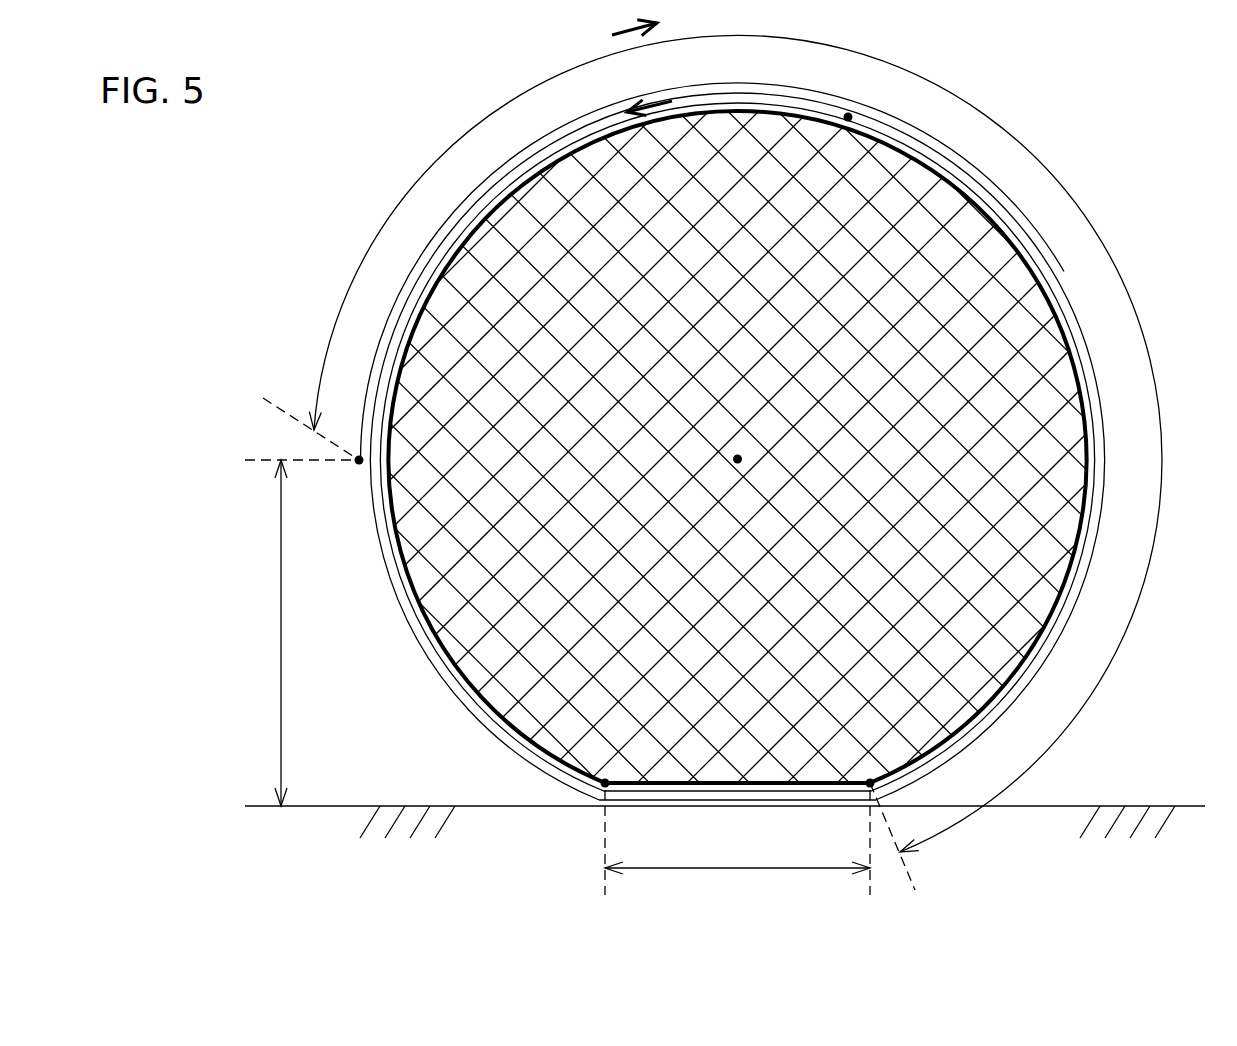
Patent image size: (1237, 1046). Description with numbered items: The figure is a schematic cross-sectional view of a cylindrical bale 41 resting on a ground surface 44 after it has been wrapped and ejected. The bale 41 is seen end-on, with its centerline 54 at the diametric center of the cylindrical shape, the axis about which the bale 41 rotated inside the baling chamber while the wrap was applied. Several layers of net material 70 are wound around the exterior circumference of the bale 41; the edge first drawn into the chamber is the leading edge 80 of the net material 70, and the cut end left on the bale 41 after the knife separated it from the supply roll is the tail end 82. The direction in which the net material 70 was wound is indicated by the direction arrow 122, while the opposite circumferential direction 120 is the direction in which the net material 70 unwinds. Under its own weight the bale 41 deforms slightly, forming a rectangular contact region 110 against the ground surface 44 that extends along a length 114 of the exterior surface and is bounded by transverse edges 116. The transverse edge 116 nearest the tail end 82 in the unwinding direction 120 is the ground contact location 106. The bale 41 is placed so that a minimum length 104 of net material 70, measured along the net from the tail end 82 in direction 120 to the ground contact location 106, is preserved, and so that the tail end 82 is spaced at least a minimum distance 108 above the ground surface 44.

The bale 41 is at (1017, 240).
The ground surface 44 is at (1192, 806).
The centerline 54 is at (737, 459).
The net material 70 is at (955, 150).
The leading edge 80 is at (848, 114).
The tail end 82 is at (359, 462).
The minimum length 104 is at (1140, 322).
The ground contact location 106 is at (870, 782).
The minimum distance 108 is at (281, 632).
The rectangular contact region 110 is at (722, 782).
The length 114 is at (713, 870).
The transverse edges 116 is at (603, 780).
The circumferential direction 120 is at (630, 25).
The direction arrow 122 is at (662, 98).